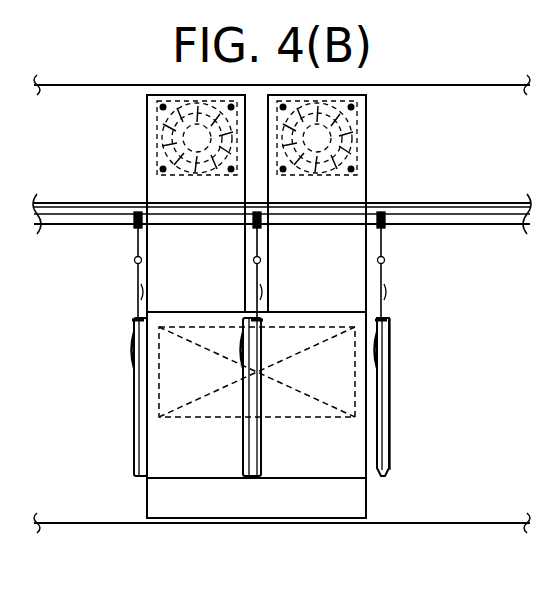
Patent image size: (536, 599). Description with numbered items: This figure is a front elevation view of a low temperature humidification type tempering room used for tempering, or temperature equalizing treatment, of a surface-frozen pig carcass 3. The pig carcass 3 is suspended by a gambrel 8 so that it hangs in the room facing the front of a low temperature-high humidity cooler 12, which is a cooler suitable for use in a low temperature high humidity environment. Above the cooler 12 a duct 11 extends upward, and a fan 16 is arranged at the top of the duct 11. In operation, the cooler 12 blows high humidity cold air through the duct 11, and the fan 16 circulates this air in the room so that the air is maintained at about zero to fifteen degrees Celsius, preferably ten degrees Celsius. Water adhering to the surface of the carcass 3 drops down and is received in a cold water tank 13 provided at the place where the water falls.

The fan 16 is at (337, 130).
The duct 11 is at (348, 246).
The gambrel 8 is at (384, 298).
The low temperature-high humidity cooler 12 is at (176, 383).
The cold water tank 13 is at (167, 506).
The pig carcass 3 is at (397, 402).